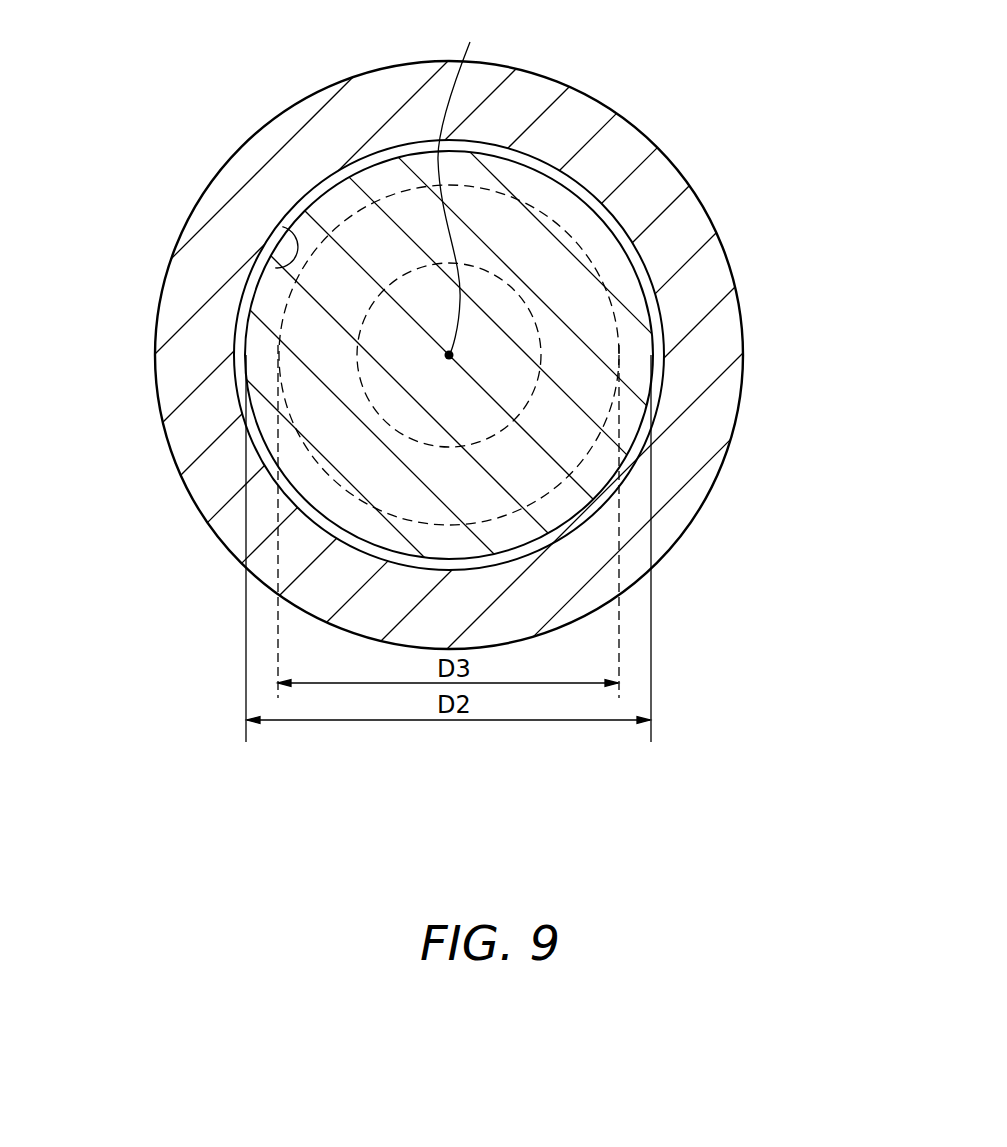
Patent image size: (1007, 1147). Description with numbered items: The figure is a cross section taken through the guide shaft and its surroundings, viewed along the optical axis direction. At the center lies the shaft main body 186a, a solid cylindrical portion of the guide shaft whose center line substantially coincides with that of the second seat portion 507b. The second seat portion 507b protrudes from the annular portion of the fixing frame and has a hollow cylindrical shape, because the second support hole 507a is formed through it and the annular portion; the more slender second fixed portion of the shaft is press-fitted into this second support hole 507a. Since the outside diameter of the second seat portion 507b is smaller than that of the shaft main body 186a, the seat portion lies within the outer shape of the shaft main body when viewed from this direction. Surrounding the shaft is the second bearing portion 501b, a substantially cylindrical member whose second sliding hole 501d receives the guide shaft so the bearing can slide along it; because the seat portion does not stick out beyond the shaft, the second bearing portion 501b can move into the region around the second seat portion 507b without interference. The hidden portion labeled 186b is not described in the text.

The second bearing portion 501b is at (270, 150).
The second sliding hole 501d is at (275, 268).
The shaft main body 186a is at (572, 217).
The valve element hidden portion 186b is at (485, 268).
The second seat portion 507b is at (600, 273).
The second support hole 507a is at (541, 338).